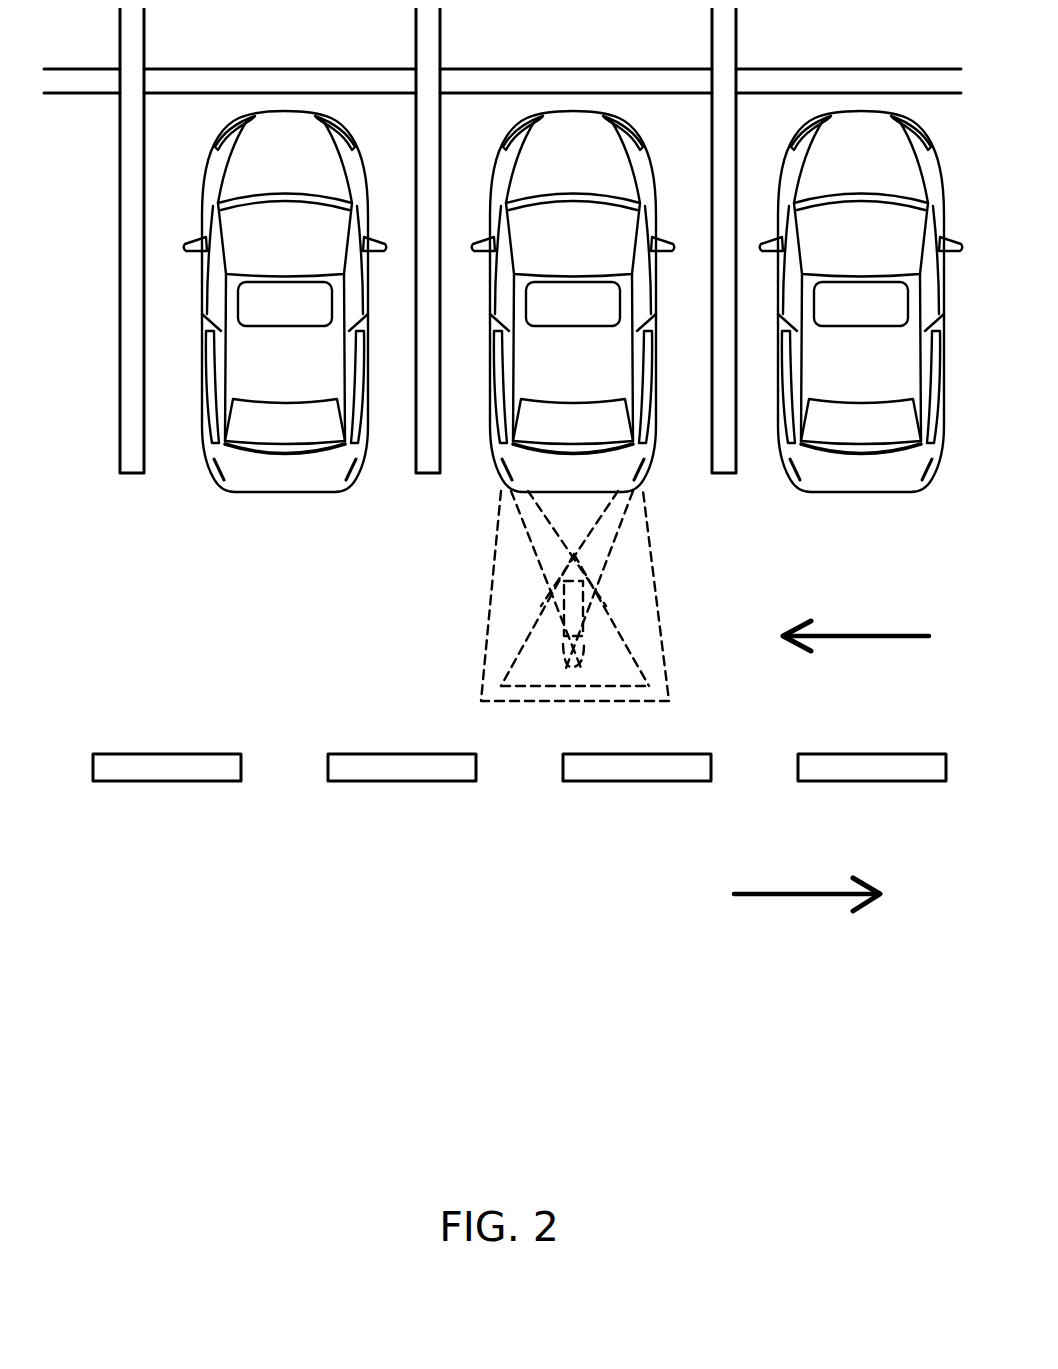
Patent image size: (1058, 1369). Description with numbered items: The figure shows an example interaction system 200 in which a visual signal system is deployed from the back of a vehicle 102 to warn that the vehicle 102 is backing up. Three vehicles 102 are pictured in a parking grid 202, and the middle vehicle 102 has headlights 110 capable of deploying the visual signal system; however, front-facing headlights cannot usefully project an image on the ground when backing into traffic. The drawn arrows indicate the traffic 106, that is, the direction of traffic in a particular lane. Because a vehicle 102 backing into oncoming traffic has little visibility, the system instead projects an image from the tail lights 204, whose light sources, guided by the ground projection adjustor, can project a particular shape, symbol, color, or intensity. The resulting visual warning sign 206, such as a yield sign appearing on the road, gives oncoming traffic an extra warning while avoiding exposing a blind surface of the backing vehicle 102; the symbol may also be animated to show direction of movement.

The vehicle 102 is at (573, 301).
The traffic 106 is at (865, 633).
The headlights 110 is at (522, 122).
The interaction system 200 is at (523, 1191).
The parking grid 202 is at (573, 66).
The tail lights 204 is at (497, 486).
The visual warning sign 206 is at (500, 663).